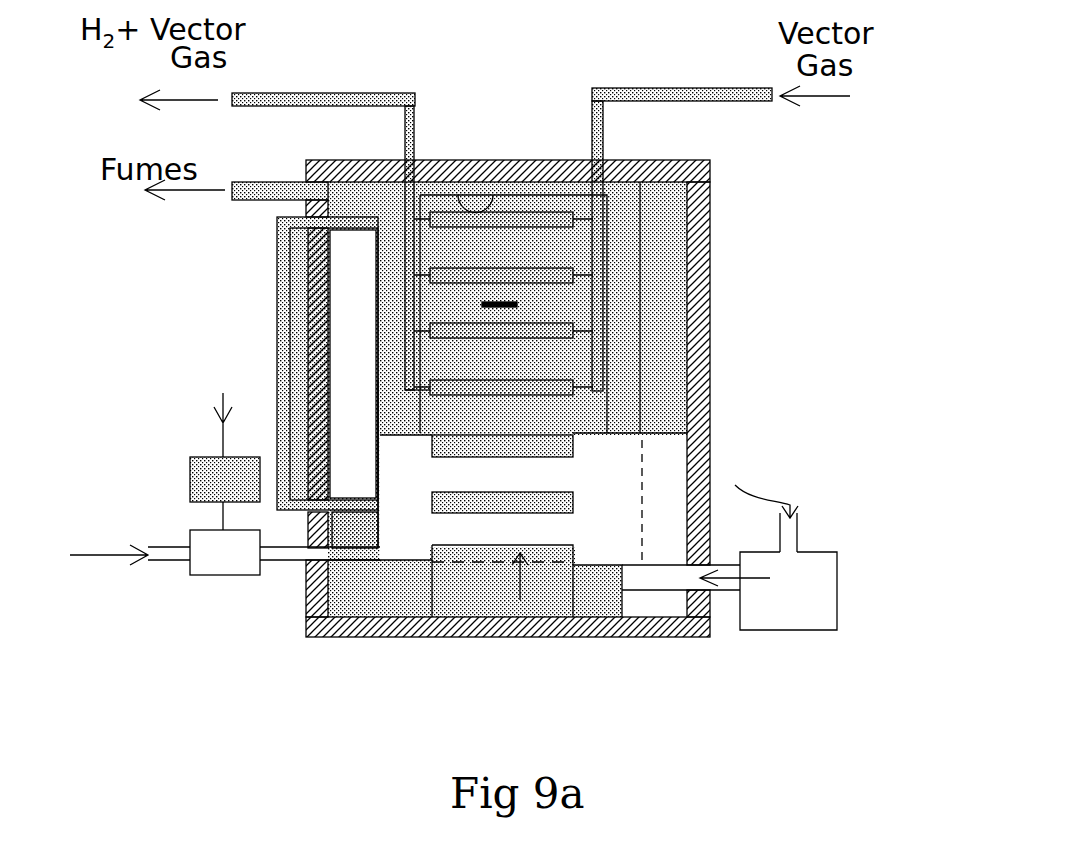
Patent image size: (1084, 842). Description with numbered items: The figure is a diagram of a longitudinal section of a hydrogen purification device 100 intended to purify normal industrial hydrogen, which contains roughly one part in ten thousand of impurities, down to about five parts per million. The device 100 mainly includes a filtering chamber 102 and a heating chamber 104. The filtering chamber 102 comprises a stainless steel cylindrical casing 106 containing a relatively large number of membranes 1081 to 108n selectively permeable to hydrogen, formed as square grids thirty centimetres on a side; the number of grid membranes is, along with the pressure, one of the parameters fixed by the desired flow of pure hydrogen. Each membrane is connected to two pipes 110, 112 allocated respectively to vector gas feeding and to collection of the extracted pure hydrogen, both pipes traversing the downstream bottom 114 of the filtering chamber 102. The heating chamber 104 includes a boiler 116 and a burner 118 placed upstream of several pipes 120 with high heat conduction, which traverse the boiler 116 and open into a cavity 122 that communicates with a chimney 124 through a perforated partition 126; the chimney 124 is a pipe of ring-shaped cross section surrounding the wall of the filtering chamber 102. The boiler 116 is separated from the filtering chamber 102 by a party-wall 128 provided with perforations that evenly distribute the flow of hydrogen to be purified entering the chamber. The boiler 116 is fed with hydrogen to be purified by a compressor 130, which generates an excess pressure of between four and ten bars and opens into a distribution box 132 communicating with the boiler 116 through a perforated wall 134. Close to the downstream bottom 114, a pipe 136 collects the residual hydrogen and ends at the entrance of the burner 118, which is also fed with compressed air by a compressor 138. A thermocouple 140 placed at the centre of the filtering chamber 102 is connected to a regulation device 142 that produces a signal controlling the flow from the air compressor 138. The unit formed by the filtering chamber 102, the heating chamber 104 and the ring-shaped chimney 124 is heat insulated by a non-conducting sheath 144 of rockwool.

The hydrogen purification device 100 is at (176, 316).
The filtering chamber 102 is at (708, 280).
The heating chamber 104 is at (533, 433).
The stainless steel cylindrical casing 106 is at (708, 200).
The membrane selectively permeable to hydrogen 108n is at (550, 205).
The membrane selectively permeable to hydrogen 1081 is at (560, 383).
The vector gas feeding pipe 110 is at (668, 88).
The pure hydrogen collection pipe 112 is at (285, 93).
The downstream bottom 114 is at (497, 162).
The boiler 116 is at (527, 560).
The burner 118 is at (410, 530).
The high heat conduction pipes 120 is at (480, 523).
The cavity 122 is at (603, 517).
The chimney 124 is at (270, 182).
The perforated partition 126 is at (710, 462).
The party-wall 128 is at (470, 435).
The compressor 130 is at (795, 600).
The distribution box 132 is at (553, 587).
The perforated wall 134 is at (487, 567).
The residual hydrogen collecting pipe 136 is at (283, 265).
The air compressor 138 is at (222, 547).
The thermocouple 140 is at (492, 302).
The regulation device 142 is at (190, 487).
The non-conducting sheath 144 is at (708, 250).